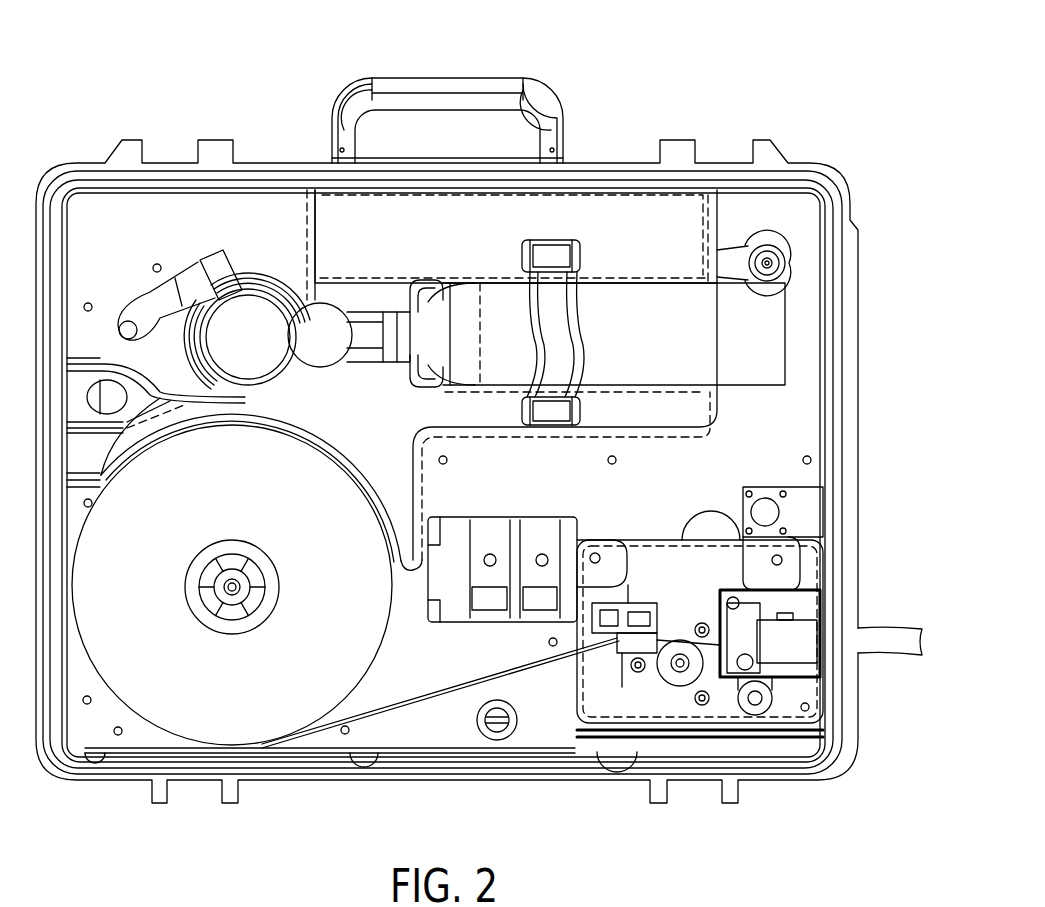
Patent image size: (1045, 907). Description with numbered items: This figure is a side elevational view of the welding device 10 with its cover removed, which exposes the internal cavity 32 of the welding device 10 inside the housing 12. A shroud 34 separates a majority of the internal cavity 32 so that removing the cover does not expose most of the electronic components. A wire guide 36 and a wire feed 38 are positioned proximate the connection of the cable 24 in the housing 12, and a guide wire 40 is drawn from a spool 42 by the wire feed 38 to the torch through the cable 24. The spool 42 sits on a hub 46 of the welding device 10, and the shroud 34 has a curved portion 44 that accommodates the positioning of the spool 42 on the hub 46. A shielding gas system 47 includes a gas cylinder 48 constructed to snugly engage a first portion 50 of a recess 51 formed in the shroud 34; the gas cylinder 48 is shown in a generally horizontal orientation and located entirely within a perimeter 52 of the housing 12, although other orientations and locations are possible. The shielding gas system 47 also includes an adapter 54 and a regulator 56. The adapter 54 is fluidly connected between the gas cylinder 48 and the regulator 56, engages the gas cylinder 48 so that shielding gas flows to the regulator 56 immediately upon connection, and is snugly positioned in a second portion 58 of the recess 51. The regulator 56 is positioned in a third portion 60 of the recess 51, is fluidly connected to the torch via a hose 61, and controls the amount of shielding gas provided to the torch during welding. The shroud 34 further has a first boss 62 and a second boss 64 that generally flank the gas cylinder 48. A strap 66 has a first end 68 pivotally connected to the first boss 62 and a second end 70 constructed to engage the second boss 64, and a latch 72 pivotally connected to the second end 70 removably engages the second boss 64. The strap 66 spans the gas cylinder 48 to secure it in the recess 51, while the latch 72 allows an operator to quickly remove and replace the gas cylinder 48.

The welding device 10 is at (716, 59).
The housing 12 is at (862, 517).
The cable 24 is at (885, 650).
The internal cavity 32 is at (798, 401).
The shroud 34 is at (350, 418).
The wire guide 36 is at (620, 645).
The wire feed 38 is at (669, 586).
The guide wire 40 is at (390, 708).
The spool 42 is at (179, 689).
The curved portion 44 is at (172, 437).
The hub 46 is at (212, 597).
The shielding gas system 47 is at (404, 246).
The gas cylinder 48 is at (687, 351).
The first portion 50 is at (620, 280).
The recess 51 is at (440, 282).
The perimeter 52 is at (845, 222).
The adapter 54 is at (360, 316).
The regulator 56 is at (235, 343).
The second portion 58 is at (378, 314).
The third portion 60 is at (258, 283).
The hose 61 is at (128, 312).
The first boss 62 is at (572, 245).
The second boss 64 is at (582, 413).
The strap 66 is at (547, 343).
The first end 68 is at (545, 258).
The second end 70 is at (553, 412).
The latch 72 is at (562, 372).